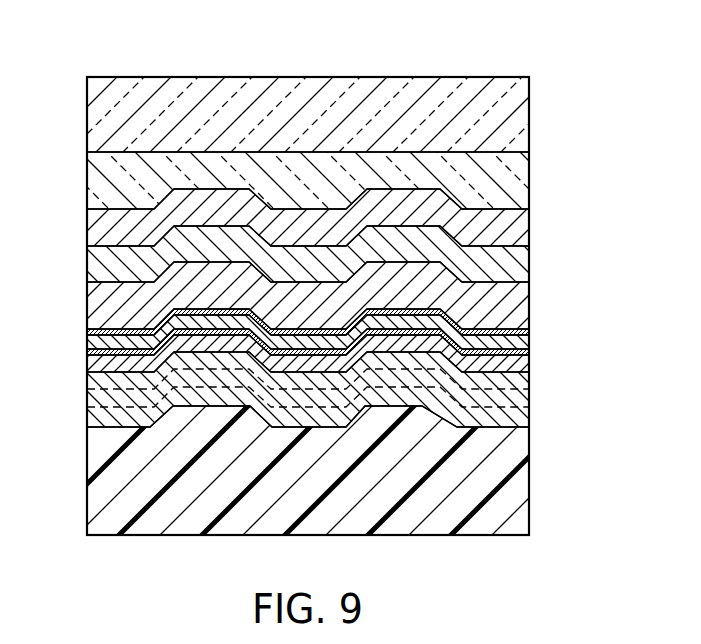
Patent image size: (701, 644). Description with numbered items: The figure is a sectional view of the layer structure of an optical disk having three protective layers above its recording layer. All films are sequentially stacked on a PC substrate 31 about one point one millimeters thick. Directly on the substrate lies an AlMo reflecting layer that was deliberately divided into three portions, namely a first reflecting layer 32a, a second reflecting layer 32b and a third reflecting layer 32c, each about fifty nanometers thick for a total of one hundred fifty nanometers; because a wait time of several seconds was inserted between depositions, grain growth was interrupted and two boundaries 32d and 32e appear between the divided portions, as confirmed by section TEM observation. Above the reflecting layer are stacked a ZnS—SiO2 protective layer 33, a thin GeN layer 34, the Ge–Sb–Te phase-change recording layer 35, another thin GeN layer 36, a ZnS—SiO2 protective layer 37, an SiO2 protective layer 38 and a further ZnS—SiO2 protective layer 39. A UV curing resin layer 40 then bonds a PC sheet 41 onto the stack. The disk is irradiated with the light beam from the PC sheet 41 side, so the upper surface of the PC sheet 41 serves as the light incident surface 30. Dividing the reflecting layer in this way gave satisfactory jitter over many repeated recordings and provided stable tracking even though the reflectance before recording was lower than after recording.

The light incident surface 30 is at (345, 72).
The PC substrate 31 is at (525, 473).
The AlMo reflecting layer 32a is at (521, 415).
The AlMo reflecting layer 32b is at (520, 398).
The AlMo reflecting layer 32c is at (523, 380).
The boundary 32d is at (86, 407).
The boundary 32e is at (86, 388).
The protective layer 33 is at (522, 367).
The GeN layer 34 is at (87, 353).
The recording layer 35 is at (525, 342).
The GeN layer 36 is at (87, 332).
The protective layer 37 is at (517, 304).
The protective layer 38 is at (520, 265).
The protective layer 39 is at (517, 228).
The UV curing resin layer 40 is at (519, 188).
The PC sheet 41 is at (517, 115).